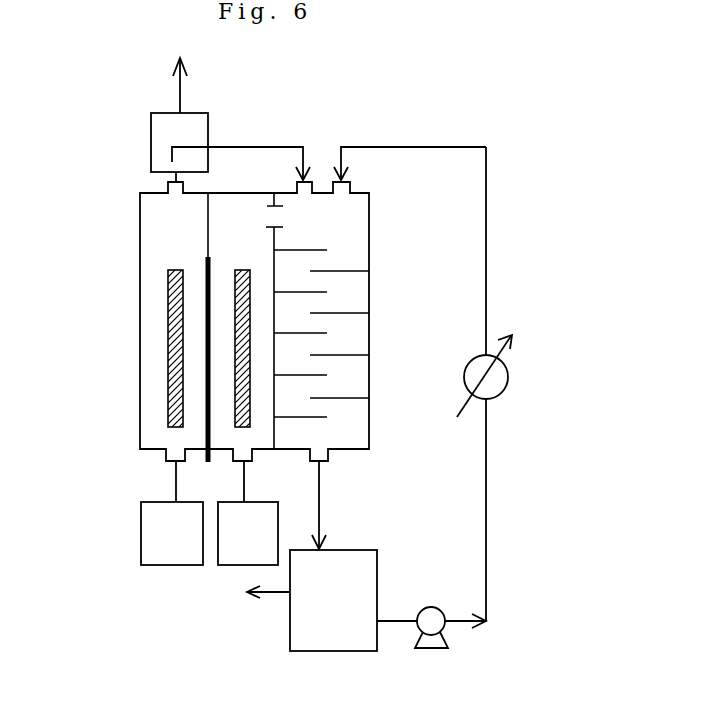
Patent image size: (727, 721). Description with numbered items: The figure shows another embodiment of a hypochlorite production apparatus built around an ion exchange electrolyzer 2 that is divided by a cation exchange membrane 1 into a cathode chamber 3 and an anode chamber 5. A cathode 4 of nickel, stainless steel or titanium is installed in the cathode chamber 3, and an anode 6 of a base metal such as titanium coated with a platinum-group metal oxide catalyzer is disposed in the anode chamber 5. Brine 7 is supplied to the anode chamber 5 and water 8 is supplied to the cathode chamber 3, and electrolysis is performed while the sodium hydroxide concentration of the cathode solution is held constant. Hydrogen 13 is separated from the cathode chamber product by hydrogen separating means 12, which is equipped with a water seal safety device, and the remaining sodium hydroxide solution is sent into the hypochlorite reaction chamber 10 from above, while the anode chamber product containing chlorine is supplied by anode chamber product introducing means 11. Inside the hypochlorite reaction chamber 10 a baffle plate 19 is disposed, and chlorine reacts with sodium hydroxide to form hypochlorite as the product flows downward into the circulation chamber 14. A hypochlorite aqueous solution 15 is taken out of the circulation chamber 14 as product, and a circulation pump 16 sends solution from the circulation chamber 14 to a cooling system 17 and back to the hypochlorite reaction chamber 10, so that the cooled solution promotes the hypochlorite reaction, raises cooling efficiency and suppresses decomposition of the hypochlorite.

The cation exchange membrane 1 is at (198, 422).
The ion exchange electrolyzer 2 is at (125, 227).
The cathode chamber 3 is at (153, 282).
The cathode 4 is at (173, 363).
The anode chamber 5 is at (260, 435).
The anode 6 is at (238, 427).
The brine 7 is at (248, 513).
The water 8 is at (172, 513).
The hypochlorite reaction chamber 10 is at (343, 232).
The anode chamber product introducing means 11 is at (270, 217).
The hydrogen separating means 12 is at (167, 133).
The hydrogen 13 is at (188, 95).
The circulation chamber 14 is at (333, 556).
The hypochlorite aqueous solution 15 is at (250, 598).
The circulation pump 16 is at (430, 642).
The cooling system 17 is at (498, 380).
The baffle plate 19 is at (343, 278).